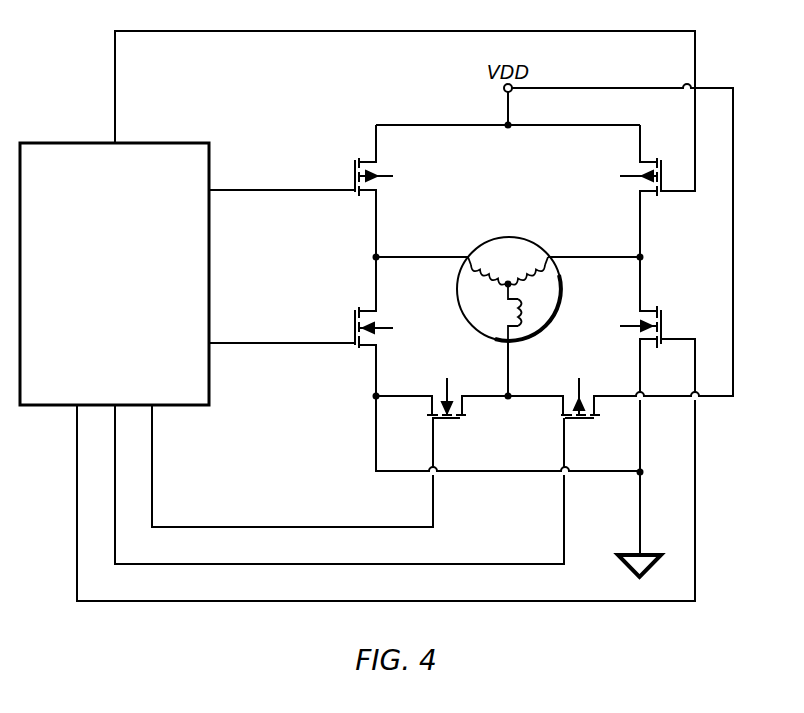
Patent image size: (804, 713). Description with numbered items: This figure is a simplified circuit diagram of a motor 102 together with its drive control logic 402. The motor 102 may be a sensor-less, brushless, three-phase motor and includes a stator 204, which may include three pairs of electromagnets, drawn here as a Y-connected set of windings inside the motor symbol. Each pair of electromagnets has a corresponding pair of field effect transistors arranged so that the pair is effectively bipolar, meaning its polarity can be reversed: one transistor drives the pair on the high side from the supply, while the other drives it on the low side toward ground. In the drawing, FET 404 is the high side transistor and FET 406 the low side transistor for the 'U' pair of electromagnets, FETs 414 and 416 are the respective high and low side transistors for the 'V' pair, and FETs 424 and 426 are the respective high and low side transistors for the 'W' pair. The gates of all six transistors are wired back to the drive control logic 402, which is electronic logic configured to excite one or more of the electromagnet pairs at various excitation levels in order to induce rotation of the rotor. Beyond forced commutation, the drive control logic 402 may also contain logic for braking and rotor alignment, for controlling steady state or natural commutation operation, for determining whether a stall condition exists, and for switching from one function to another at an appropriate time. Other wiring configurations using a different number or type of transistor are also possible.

The drive control logic 402 is at (114, 274).
The FET 404 is at (393, 176).
The FET 406 is at (393, 328).
The FET 414 is at (620, 176).
The FET 416 is at (620, 326).
The FET 424 is at (582, 418).
The FET 426 is at (457, 418).
The motor 102 is at (548, 238).
The stator 204 is at (493, 237).